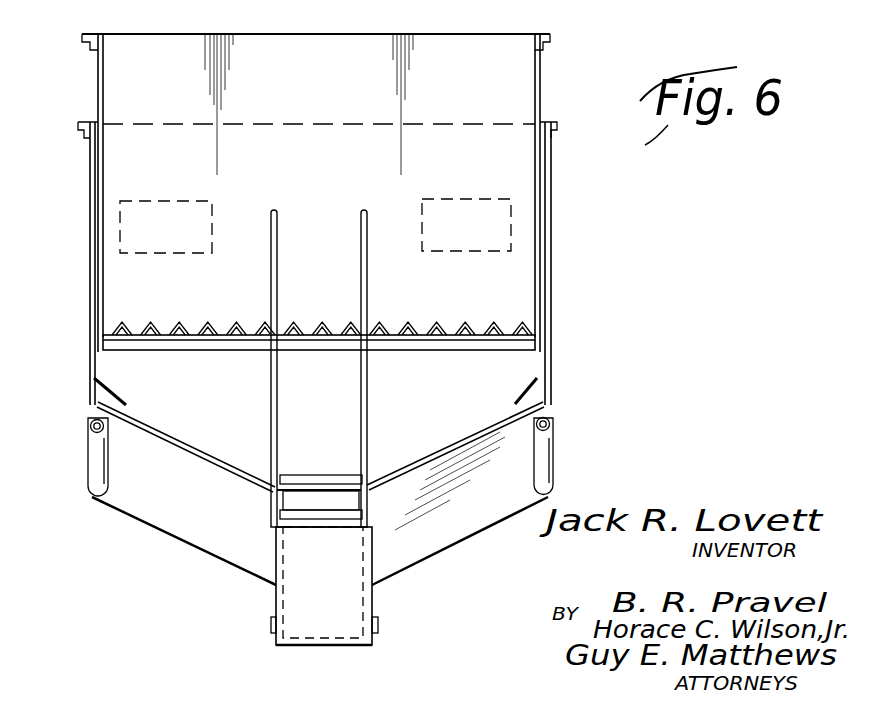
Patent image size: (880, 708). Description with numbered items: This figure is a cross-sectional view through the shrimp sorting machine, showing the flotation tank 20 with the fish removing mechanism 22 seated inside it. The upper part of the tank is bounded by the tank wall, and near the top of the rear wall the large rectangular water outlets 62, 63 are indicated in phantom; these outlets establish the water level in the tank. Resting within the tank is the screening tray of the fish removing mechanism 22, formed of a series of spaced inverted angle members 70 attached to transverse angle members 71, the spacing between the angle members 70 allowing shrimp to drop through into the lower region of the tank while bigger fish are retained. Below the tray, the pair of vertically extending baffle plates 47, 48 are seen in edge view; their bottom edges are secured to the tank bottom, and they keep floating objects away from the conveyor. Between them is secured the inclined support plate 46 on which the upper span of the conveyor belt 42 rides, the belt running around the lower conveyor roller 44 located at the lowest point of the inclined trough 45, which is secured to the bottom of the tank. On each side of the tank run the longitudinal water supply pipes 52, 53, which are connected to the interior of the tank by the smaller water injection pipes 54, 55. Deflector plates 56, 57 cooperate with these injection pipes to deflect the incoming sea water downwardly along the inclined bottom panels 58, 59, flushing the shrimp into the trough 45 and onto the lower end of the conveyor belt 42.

The flotation tank 20 is at (551, 250).
The fish removing mechanism 22 is at (540, 78).
The conveyor belt 42 is at (316, 475).
The lower conveyor roller 44 is at (380, 622).
The inclined trough 45 is at (275, 596).
The inclined support plate 46 is at (335, 490).
The baffle plate 47 is at (271, 270).
The baffle plate 48 is at (368, 269).
The longitudinal water supply pipe 52 is at (97, 450).
The longitudinal water supply pipe 53 is at (546, 448).
The water injection pipes 54 is at (93, 411).
The water injection pipes 55 is at (553, 417).
The deflector plate 56 is at (123, 394).
The deflector plate 57 is at (524, 392).
The inclined bottom panel 58 is at (135, 518).
The inclined bottom panel 59 is at (455, 533).
The water outlet 62 is at (120, 226).
The water outlet 63 is at (511, 216).
The inverted angle members 70 is at (170, 322).
The transverse angle members 71 is at (192, 352).